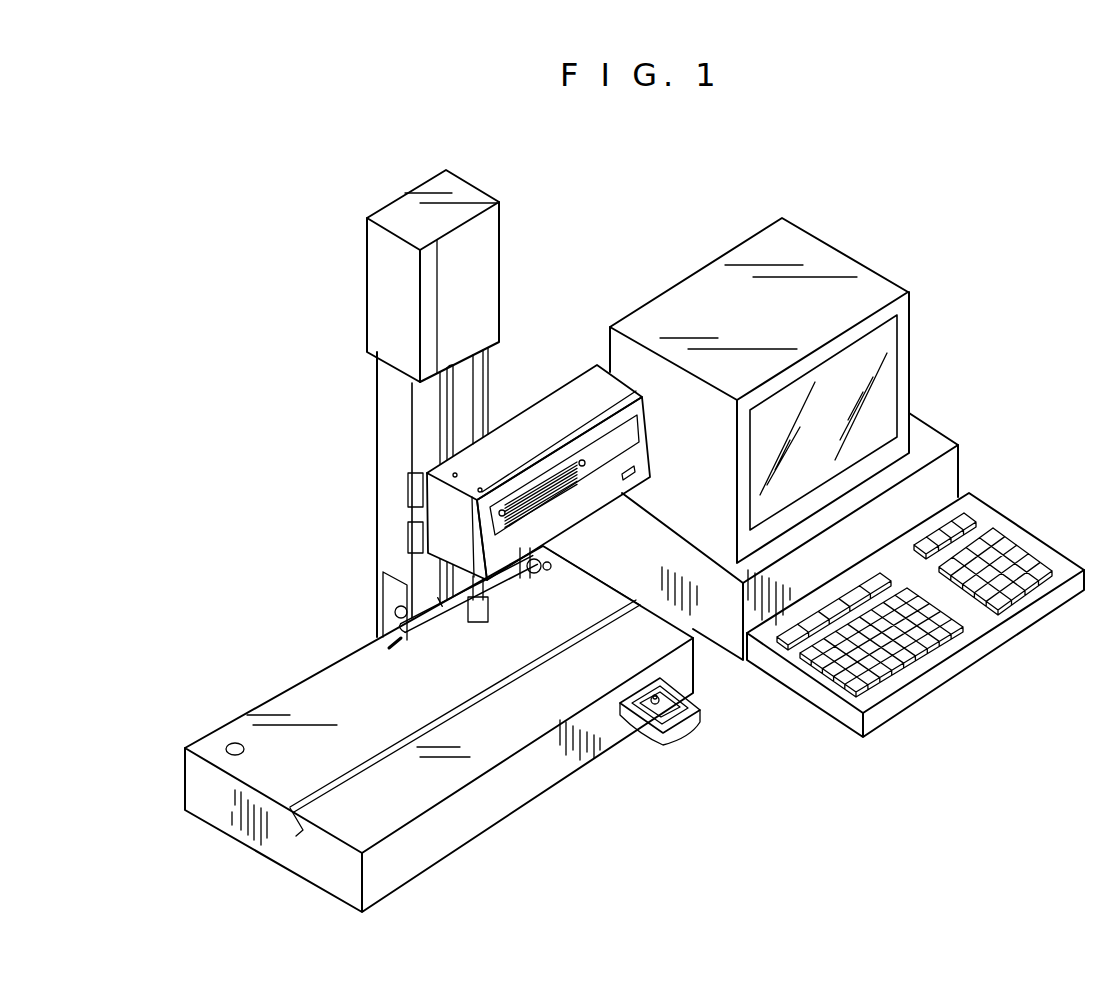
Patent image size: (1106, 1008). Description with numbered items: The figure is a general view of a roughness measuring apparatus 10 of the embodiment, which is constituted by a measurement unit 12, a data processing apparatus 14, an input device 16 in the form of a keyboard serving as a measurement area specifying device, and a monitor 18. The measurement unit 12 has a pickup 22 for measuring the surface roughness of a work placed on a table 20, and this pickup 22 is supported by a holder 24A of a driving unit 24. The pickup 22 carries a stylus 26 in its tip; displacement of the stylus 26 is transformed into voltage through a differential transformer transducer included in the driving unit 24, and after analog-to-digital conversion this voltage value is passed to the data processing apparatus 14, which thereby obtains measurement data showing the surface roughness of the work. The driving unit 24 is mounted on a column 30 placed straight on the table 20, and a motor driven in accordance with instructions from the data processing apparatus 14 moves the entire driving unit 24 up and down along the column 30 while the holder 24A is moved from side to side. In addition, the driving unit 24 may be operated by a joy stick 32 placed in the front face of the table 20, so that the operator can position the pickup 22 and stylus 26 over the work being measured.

The roughness measuring apparatus 10 is at (747, 205).
The measurement unit 12 is at (335, 572).
The data processing apparatus 14 is at (943, 477).
The input device 16 is at (1014, 555).
The monitor 18 is at (873, 357).
The table 20 is at (517, 725).
The pickup 22 is at (425, 623).
The driving unit 24 is at (585, 400).
The holder 24A is at (537, 570).
The stylus 26 is at (387, 650).
The column 30 is at (390, 423).
The joy stick 32 is at (693, 703).